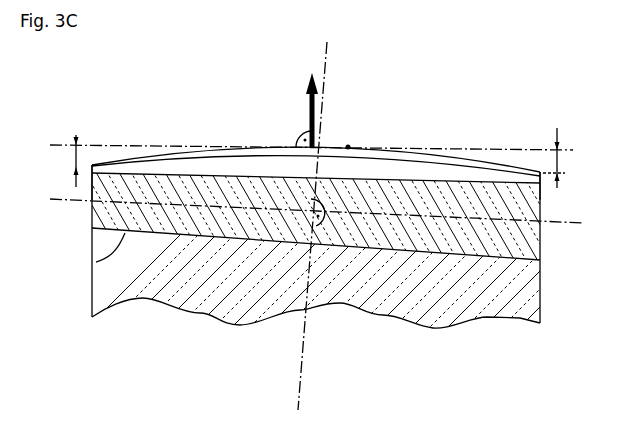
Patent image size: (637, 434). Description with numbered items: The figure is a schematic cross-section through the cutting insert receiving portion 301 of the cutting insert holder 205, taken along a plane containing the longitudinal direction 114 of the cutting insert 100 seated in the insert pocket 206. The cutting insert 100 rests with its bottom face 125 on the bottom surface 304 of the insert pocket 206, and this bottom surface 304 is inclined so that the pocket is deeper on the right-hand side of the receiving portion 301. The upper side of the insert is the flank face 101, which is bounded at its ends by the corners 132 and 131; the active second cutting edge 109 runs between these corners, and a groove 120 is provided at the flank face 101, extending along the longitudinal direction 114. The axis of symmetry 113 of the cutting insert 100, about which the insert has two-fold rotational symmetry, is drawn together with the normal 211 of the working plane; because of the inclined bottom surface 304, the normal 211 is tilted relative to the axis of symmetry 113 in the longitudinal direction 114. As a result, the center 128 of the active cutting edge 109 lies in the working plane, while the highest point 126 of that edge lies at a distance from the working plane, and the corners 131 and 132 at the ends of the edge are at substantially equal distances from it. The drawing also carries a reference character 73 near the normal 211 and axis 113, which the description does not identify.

The cutting insert 100 is at (109, 94).
The flank face 101 is at (180, 154).
The second cutting edge 109 is at (473, 160).
The groove 120 is at (433, 178).
The insert pocket 206 is at (67, 241).
The bottom surface 304 is at (541, 261).
The cutting insert holder 205 is at (541, 293).
The cutting insert receiving portion 301 is at (91, 313).
The bottom face 125 is at (96, 262).
The corner 132 is at (93, 164).
The corner 131 is at (540, 170).
The center of the second cutting edge 128 is at (320, 137).
The longitudinal direction 114 is at (563, 222).
The axis of symmetry 113 is at (326, 62).
The normal vector of the working plane 211 is at (309, 113).
The angle 73 is at (324, 76).
The highest point of the second cutting edge 126 is at (349, 146).